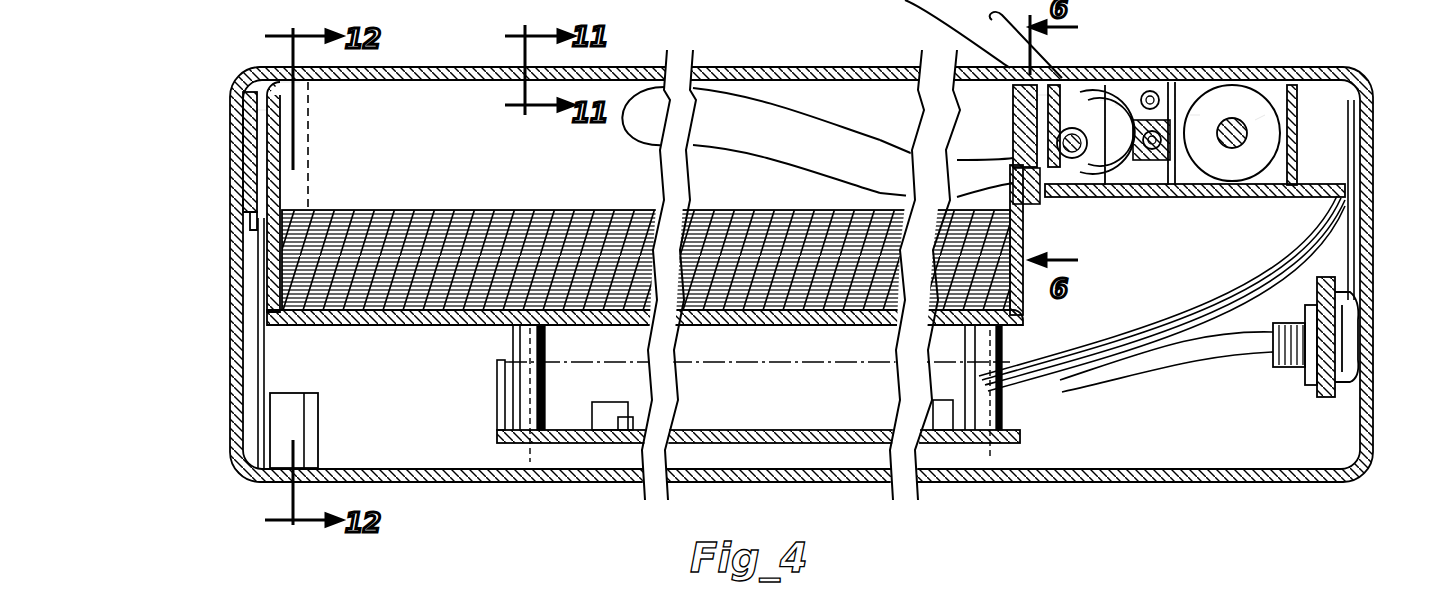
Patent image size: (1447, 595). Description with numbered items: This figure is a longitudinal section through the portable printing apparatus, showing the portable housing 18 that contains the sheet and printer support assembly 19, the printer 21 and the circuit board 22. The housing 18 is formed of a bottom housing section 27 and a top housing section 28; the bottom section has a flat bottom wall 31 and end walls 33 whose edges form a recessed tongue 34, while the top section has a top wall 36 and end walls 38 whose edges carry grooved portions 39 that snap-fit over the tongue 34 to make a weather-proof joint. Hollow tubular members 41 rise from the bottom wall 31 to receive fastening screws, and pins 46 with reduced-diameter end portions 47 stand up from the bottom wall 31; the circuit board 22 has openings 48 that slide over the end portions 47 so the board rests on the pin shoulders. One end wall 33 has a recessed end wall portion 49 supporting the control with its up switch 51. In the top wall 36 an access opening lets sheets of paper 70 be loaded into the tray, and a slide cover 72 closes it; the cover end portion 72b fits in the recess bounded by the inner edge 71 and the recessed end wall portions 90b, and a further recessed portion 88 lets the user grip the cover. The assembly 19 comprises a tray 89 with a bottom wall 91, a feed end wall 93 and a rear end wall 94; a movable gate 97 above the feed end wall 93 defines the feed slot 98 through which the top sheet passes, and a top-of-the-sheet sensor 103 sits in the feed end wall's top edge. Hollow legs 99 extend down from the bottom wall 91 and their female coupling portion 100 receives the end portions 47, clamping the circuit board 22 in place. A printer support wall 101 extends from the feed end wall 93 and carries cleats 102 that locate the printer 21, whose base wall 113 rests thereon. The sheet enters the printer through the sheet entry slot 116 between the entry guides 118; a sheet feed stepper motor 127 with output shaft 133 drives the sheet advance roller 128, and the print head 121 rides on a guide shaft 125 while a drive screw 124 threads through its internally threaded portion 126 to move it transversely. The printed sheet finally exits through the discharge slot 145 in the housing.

The portable housing 18 is at (228, 293).
The sheet and printer support assembly 19 is at (645, 244).
The printer 21 is at (1300, 128).
The circuit board 22 is at (768, 428).
The bottom housing section 27 is at (582, 488).
The top housing section 28 is at (622, 64).
The bottom wall 31 is at (803, 484).
The end walls 33 is at (232, 362).
The recessed tongue 34 is at (243, 228).
The top wall 36 is at (1264, 78).
The end walls 38 is at (1355, 105).
The grooved portions 39 is at (243, 213).
The hollow tubular members 41 is at (280, 430).
The pins 46 is at (490, 467).
The end portions 47 is at (500, 397).
The openings 48 is at (530, 470).
The recessed end wall portion 49 is at (1330, 393).
The up switch 51 is at (1362, 343).
The sheets of paper 70 is at (426, 208).
The inner edge 71 is at (257, 77).
The slide cover 72 is at (845, 84).
The cover end portion 72b is at (238, 90).
The recessed portion 88 is at (243, 170).
The tray 89 is at (330, 326).
The recessed end wall portions 90b is at (250, 117).
The bottom wall 91 is at (395, 320).
The feed end wall 93 is at (1027, 303).
The rear end wall 94 is at (300, 160).
The movable gate 97 is at (920, 108).
The feed slot 98 is at (940, 176).
The hollow legs 99 is at (515, 335).
The female coupling portion 100 is at (540, 378).
The printer support wall 101 is at (1262, 215).
The cleats 102 is at (1356, 148).
The top-of-the-sheet sensor 103 is at (1012, 192).
The base wall 113 is at (1130, 190).
The sheet entry slot 116 is at (1033, 213).
The entry guides 118 is at (1040, 133).
The print head 121 is at (1118, 110).
The drive screw 124 is at (1197, 118).
The guide shaft 125 is at (1160, 95).
The internally threaded portion 126 is at (1150, 165).
The sheet feed stepper motor 127 is at (1262, 118).
The sheet advance roller 128 is at (1068, 100).
The output shaft 133 is at (1352, 190).
The discharge slot 145 is at (1110, 110).